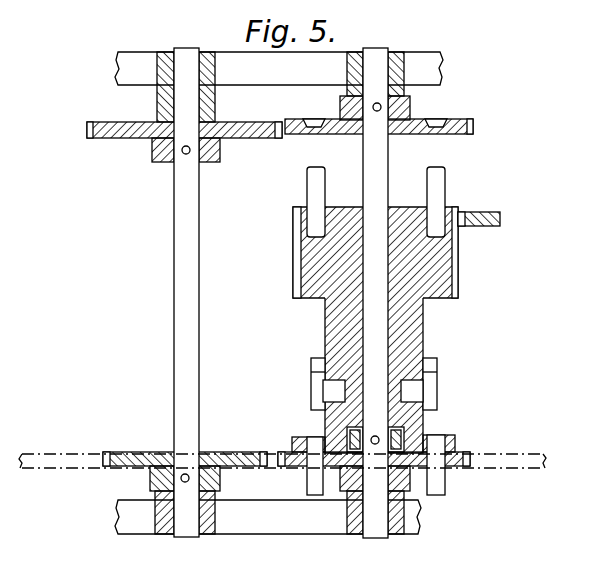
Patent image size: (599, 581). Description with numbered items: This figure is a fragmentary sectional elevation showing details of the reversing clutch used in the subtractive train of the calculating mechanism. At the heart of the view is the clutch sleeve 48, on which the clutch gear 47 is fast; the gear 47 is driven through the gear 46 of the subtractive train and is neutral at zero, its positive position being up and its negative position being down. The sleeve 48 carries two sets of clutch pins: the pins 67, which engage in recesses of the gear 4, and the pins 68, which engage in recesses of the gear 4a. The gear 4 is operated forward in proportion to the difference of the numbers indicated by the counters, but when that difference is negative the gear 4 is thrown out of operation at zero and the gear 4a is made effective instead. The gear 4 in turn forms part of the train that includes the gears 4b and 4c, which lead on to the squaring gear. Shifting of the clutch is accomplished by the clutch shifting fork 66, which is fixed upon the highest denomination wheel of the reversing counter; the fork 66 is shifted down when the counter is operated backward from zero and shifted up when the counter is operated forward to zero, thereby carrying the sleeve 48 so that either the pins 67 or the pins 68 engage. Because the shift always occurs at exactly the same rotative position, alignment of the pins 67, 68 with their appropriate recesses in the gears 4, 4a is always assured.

The gear 4 is at (448, 122).
The gear 4a is at (457, 452).
The gear 4b is at (160, 138).
The gear 4c is at (165, 452).
The gear 46 is at (480, 227).
The gear 47 is at (296, 288).
The clutch sleeve 48 is at (326, 344).
The clutch shifting fork 66 is at (438, 363).
The pins 67 is at (310, 184).
The pins 68 is at (310, 481).